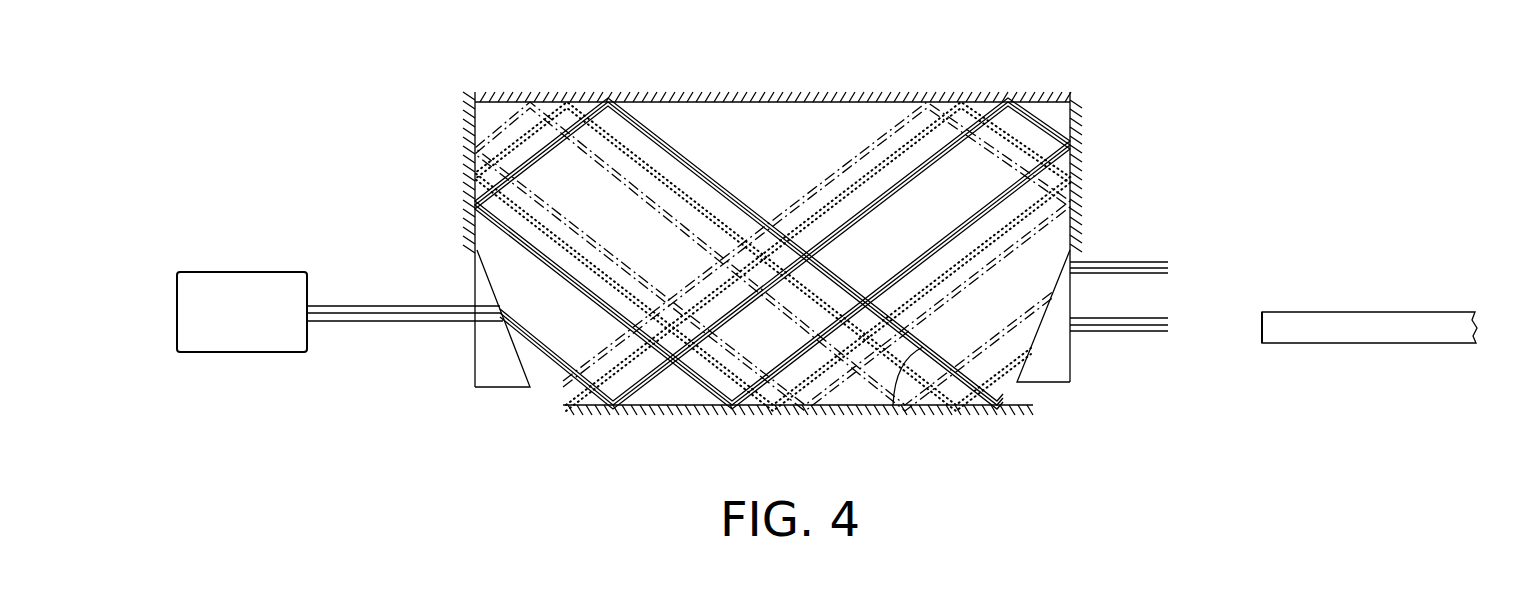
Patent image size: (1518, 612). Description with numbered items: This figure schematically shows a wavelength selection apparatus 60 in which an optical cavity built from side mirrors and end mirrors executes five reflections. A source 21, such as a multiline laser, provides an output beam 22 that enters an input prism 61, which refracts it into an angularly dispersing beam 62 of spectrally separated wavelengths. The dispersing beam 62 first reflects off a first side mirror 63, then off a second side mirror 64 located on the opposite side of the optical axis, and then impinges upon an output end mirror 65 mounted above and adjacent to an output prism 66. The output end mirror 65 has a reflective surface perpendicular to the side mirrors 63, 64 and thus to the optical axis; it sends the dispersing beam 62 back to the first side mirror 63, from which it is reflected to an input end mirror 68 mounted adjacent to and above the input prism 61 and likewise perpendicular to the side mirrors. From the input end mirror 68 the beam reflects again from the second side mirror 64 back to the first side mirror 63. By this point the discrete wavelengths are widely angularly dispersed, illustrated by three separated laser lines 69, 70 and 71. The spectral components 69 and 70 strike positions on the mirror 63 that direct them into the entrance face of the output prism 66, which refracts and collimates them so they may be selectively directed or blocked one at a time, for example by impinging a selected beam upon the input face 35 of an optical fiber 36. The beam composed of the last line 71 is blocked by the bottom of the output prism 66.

The source 21 is at (200, 272).
The output beam 22 is at (352, 306).
The input face 35 is at (1262, 328).
The optical fiber 36 is at (1355, 312).
The apparatus 60 is at (1120, 92).
The input prism 61 is at (475, 363).
The dispersing beam 62 is at (903, 165).
The first side mirror 63 is at (676, 405).
The second side mirror 64 is at (886, 102).
The output end mirror 65 is at (1073, 163).
The output prism 66 is at (1070, 362).
The input end mirror 68 is at (475, 148).
The spectral component 69 is at (1120, 262).
The spectral component 70 is at (1150, 318).
The last line 71 is at (893, 405).